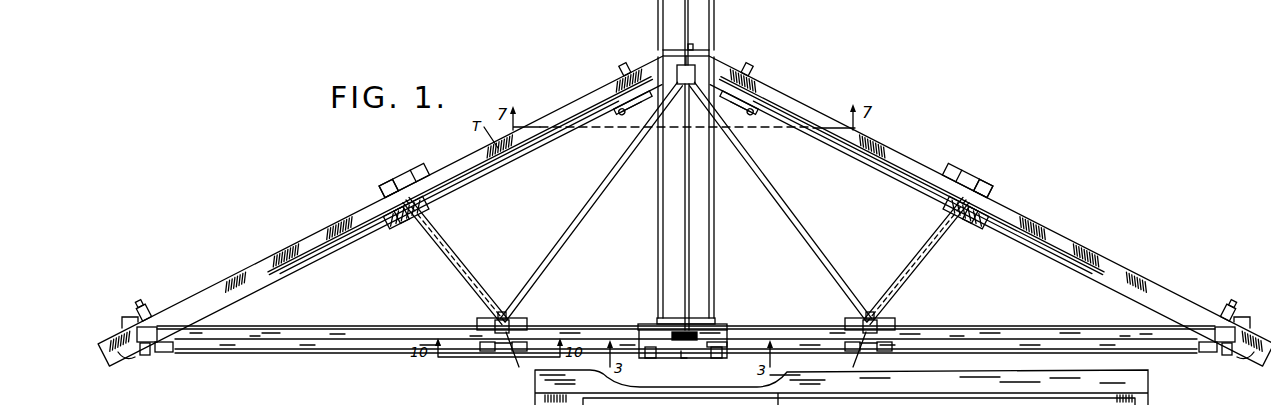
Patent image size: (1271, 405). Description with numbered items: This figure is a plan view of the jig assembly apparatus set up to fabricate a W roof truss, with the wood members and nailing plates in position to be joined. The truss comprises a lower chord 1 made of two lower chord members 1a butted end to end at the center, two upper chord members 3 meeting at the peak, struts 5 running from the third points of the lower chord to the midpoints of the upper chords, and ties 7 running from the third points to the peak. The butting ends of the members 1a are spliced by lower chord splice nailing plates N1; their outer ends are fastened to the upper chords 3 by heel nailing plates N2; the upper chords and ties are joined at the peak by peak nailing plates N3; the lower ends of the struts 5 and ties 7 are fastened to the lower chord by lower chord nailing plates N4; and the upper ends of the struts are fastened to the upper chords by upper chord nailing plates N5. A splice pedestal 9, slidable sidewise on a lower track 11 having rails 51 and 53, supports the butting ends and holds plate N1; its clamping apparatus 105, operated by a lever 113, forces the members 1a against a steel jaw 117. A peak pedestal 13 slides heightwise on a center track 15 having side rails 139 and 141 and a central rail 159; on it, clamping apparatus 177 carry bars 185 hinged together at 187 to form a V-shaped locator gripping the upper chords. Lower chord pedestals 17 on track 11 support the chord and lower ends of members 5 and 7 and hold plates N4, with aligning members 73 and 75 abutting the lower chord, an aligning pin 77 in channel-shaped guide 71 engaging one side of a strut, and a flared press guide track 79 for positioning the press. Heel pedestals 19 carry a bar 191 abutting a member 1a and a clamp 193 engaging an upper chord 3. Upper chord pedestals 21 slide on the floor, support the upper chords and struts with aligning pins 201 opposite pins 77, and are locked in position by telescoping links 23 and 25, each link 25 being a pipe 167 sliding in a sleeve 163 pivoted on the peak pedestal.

The lower chord 1 is at (686, 337).
The lower chord member 1a is at (378, 337).
The upper chord member 3 is at (343, 224).
The strut 5 is at (452, 228).
The tie 7 is at (580, 218).
The splice pedestal 9 is at (639, 322).
The lower track 11 is at (256, 354).
The peak pedestal 13 is at (665, 42).
The center track 15 is at (683, 190).
The lower chord pedestal 17 is at (476, 318).
The heel pedestal 19 is at (166, 354).
The upper chord pedestal 21 is at (372, 192).
The locking extensible and telescoping link 23 is at (466, 246).
The locking extensible and telescoping link 25 is at (540, 143).
The rail 51 is at (372, 355).
The rail 53 is at (312, 325).
The channel-shaped guide 71 is at (1137, 383).
The aligning member 73 is at (482, 351).
The aligning member 75 is at (527, 345).
The aligning pin 77 is at (500, 312).
The press guide track 79 is at (146, 355).
The clamping apparatus 105 is at (650, 358).
The lever 113 is at (624, 68).
The steel bar or jaw 117 is at (725, 341).
The rail 139 is at (656, 238).
The rail 141 is at (715, 238).
The rail 159 is at (684, 185).
The sleeve 163 is at (647, 100).
The elongate pipe 167 is at (530, 165).
The clamping apparatus 177 is at (643, 68).
The bar 185 is at (622, 82).
The hinge 187 is at (684, 45).
The bar 191 is at (126, 358).
The clamp 193 is at (126, 316).
The aligning pin 201 is at (420, 220).
The lower chord splice nailing plate N1 is at (680, 331).
The heel nailing plate N2 is at (150, 326).
The peak nailing plate N3 is at (697, 92).
The lower chord nailing plate N4 is at (508, 318).
The upper chord nailing plate N5 is at (392, 195).